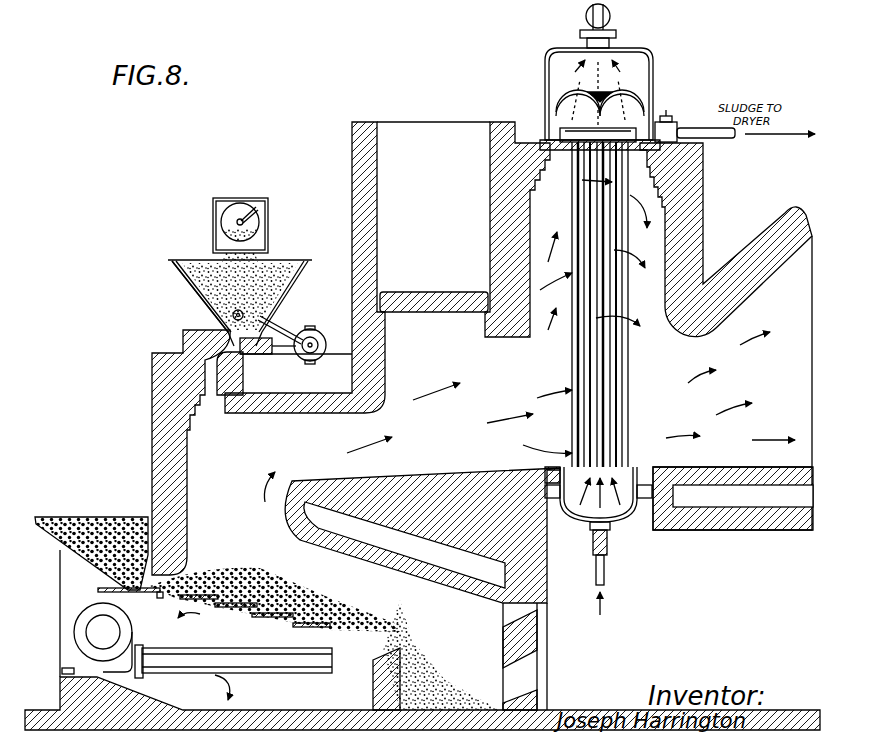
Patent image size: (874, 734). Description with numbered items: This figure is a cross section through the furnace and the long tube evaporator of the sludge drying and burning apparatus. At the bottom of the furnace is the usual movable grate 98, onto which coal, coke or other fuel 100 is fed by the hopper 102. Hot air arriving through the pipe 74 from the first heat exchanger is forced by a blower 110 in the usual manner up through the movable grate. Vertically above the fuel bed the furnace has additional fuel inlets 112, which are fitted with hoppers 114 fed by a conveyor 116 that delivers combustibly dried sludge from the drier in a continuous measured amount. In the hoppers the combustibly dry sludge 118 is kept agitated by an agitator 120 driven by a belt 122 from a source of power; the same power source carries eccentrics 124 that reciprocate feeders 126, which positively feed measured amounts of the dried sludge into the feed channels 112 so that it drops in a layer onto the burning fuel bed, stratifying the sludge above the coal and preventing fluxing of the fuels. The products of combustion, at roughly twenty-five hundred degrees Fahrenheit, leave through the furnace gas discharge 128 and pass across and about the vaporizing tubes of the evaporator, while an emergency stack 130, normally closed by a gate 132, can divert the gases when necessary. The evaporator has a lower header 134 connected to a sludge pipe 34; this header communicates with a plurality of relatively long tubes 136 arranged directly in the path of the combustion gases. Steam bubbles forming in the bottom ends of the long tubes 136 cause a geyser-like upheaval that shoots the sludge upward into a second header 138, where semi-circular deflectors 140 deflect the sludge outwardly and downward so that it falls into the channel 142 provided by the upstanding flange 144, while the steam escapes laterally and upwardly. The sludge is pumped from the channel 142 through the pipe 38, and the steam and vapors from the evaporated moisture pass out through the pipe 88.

The sludge pipe 34 is at (606, 573).
The pipe 38 is at (728, 138).
The hot air pipe 74 is at (120, 632).
The steam pipe 88 is at (610, 15).
The movable grate 98 is at (236, 609).
The fuel 100 is at (94, 568).
The hopper 102 is at (91, 537).
The blower 110 is at (268, 665).
The fuel inlets 112 is at (208, 378).
The hoppers 114 is at (186, 270).
The conveyor 116 is at (268, 222).
The combustibly dry sludge 118 is at (262, 300).
The agitator 120 is at (230, 312).
The belt 122 is at (285, 334).
The eccentrics 124 is at (312, 362).
The reciprocating feeders 126 is at (258, 355).
The furnace gas discharge 128 is at (403, 483).
The emergency stack 130 is at (430, 125).
The gate 132 is at (423, 292).
The lower header 134 is at (617, 525).
The long tubes 136 is at (572, 353).
The second header 138 is at (652, 78).
The semi-circular deflectors 140 is at (565, 98).
The channel 142 is at (640, 138).
The upstanding flange 144 is at (612, 138).